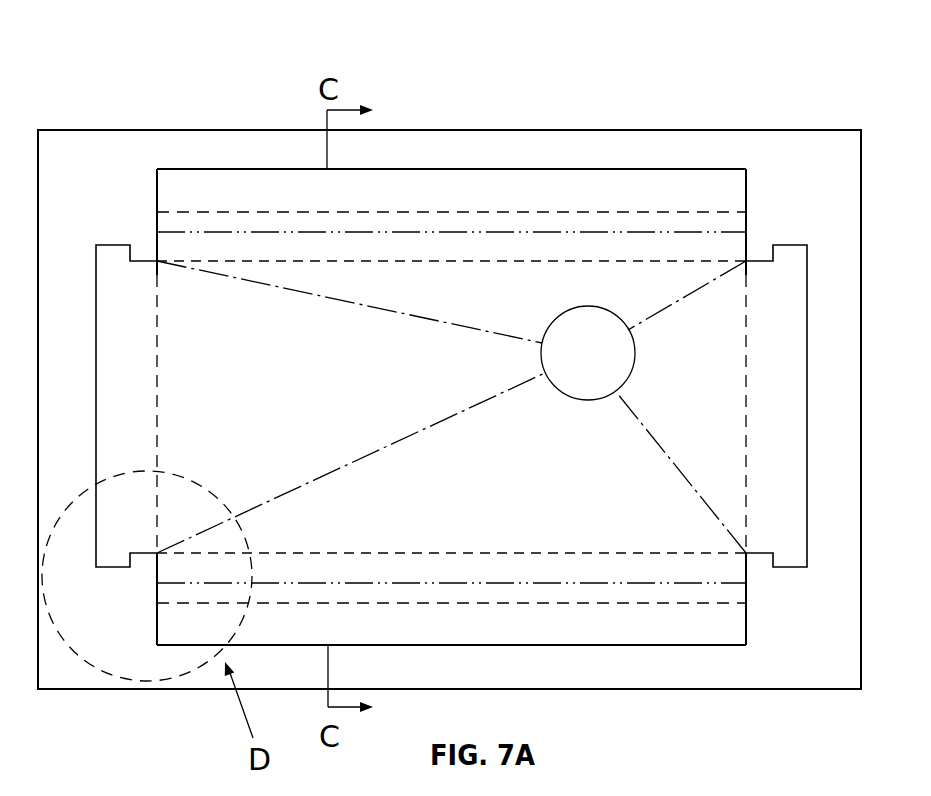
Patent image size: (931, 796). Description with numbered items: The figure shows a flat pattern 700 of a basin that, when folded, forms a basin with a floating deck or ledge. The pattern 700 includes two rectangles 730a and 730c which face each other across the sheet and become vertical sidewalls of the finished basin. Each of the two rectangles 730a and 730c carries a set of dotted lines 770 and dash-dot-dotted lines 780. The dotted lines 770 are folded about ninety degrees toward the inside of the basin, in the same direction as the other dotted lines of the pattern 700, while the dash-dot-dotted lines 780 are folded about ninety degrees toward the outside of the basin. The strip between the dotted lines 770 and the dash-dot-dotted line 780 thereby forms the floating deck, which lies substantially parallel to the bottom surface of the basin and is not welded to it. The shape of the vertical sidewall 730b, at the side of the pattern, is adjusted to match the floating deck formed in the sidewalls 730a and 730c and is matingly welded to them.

The pattern 700 is at (247, 80).
The rectangle 730a is at (477, 199).
The vertical sidewall 730b is at (156, 424).
The rectangle 730c is at (805, 424).
The dotted lines 770 is at (137, 200).
The dash-dot-dotted lines 780 is at (767, 220).